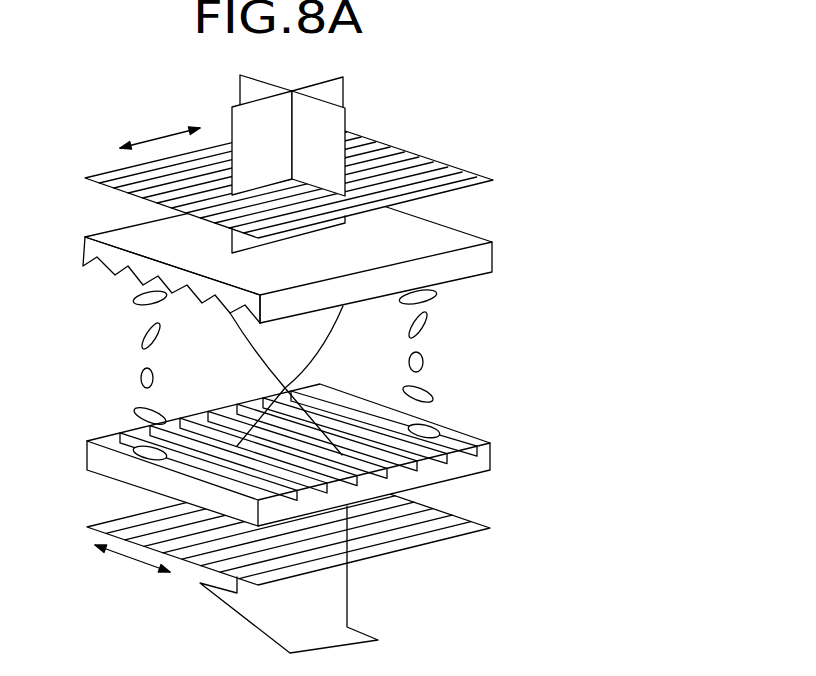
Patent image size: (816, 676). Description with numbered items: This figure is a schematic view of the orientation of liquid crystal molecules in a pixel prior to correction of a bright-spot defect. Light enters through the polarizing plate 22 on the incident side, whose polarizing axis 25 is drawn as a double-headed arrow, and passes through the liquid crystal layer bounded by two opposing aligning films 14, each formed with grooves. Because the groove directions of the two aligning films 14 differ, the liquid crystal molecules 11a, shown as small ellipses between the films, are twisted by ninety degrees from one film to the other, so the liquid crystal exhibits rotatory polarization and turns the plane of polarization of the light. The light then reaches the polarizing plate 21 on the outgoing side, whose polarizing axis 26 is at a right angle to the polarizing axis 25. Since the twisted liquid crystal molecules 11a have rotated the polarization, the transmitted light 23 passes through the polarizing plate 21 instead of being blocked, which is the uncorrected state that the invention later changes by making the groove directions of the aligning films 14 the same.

The aligning film 14 is at (86, 458).
The polarizing plate 21 is at (437, 542).
The polarizing plate 22 is at (445, 163).
The transmitted light 23 is at (345, 86).
The polarizing axis 25 is at (160, 126).
The polarizing axis 26 is at (132, 570).
The liquid crystal molecules 11a is at (432, 402).